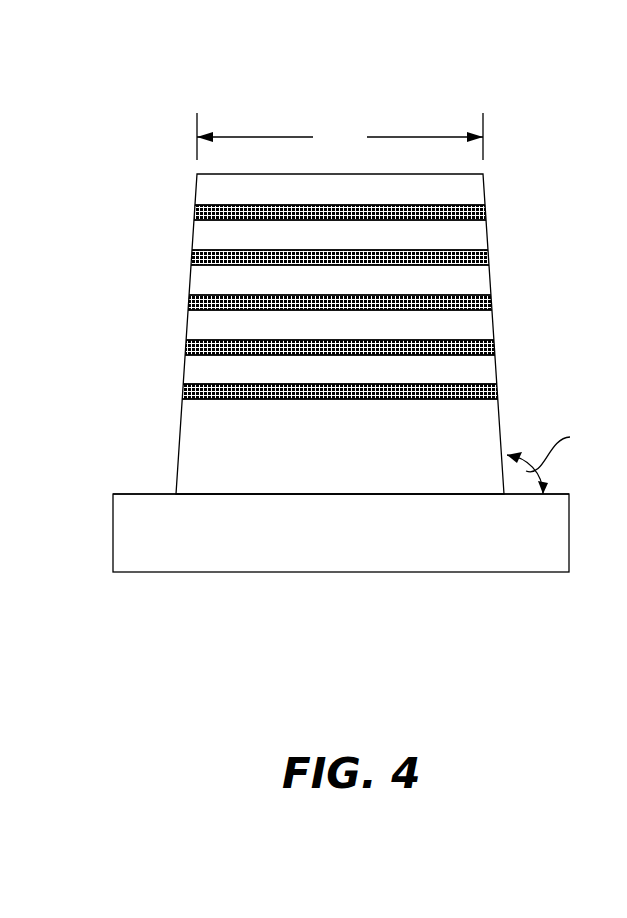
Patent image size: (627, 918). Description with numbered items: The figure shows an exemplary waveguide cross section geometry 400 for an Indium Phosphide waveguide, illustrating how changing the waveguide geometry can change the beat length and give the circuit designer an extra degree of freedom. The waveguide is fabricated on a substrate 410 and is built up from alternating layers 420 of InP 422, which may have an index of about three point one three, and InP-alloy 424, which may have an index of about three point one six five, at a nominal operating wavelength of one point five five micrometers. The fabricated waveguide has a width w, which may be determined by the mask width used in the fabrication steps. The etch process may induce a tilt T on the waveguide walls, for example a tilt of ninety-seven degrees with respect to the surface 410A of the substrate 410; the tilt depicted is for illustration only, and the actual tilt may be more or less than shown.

The semiconductor device structure 400 is at (210, 69).
The substrate 410 is at (329, 548).
The surface of substrate 410A is at (145, 493).
The alternating layers 420 is at (497, 174).
The InP 422 is at (494, 301).
The InP-alloy 424 is at (491, 281).